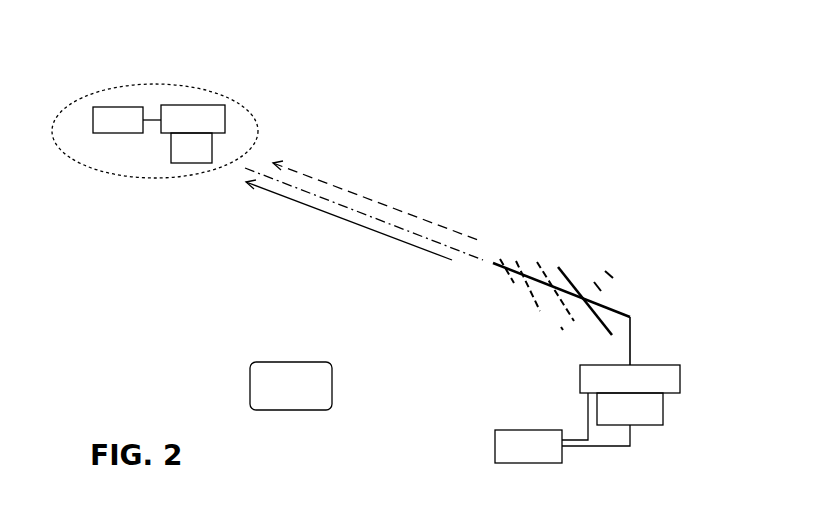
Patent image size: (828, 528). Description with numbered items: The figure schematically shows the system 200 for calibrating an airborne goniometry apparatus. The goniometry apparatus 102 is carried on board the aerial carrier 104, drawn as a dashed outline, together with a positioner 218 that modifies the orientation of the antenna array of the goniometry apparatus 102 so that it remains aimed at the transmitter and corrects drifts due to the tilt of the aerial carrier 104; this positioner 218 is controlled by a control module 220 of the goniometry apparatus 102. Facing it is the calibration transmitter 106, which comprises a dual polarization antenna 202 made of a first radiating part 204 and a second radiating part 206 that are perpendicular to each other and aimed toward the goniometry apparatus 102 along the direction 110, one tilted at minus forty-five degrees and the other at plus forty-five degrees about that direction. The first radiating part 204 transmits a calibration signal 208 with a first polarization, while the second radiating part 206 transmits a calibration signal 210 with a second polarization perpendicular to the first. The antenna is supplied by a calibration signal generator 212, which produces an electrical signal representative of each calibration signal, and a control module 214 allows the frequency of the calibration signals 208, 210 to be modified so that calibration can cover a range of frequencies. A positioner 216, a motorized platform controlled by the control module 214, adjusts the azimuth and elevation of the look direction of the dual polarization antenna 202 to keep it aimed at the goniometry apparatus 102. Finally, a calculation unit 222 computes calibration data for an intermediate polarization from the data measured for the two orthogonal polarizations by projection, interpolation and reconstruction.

The system 200 is at (177, 337).
The aerial carrier 104 is at (258, 125).
The control module 220 is at (103, 129).
The positioner 218 is at (178, 128).
The goniometry apparatus 102 is at (176, 155).
The direction 110 is at (363, 213).
The calibration signal 210 is at (418, 217).
The calibration signal 208 is at (318, 211).
The calibration transmitter 106 is at (673, 328).
The dual polarization antenna 202 is at (627, 313).
The first radiating part 204 is at (598, 322).
The second radiating part 206 is at (603, 282).
The positioner 216 is at (615, 389).
The calibration signal generator 212 is at (615, 416).
The control module 214 is at (513, 455).
The calculation unit 222 is at (276, 393).